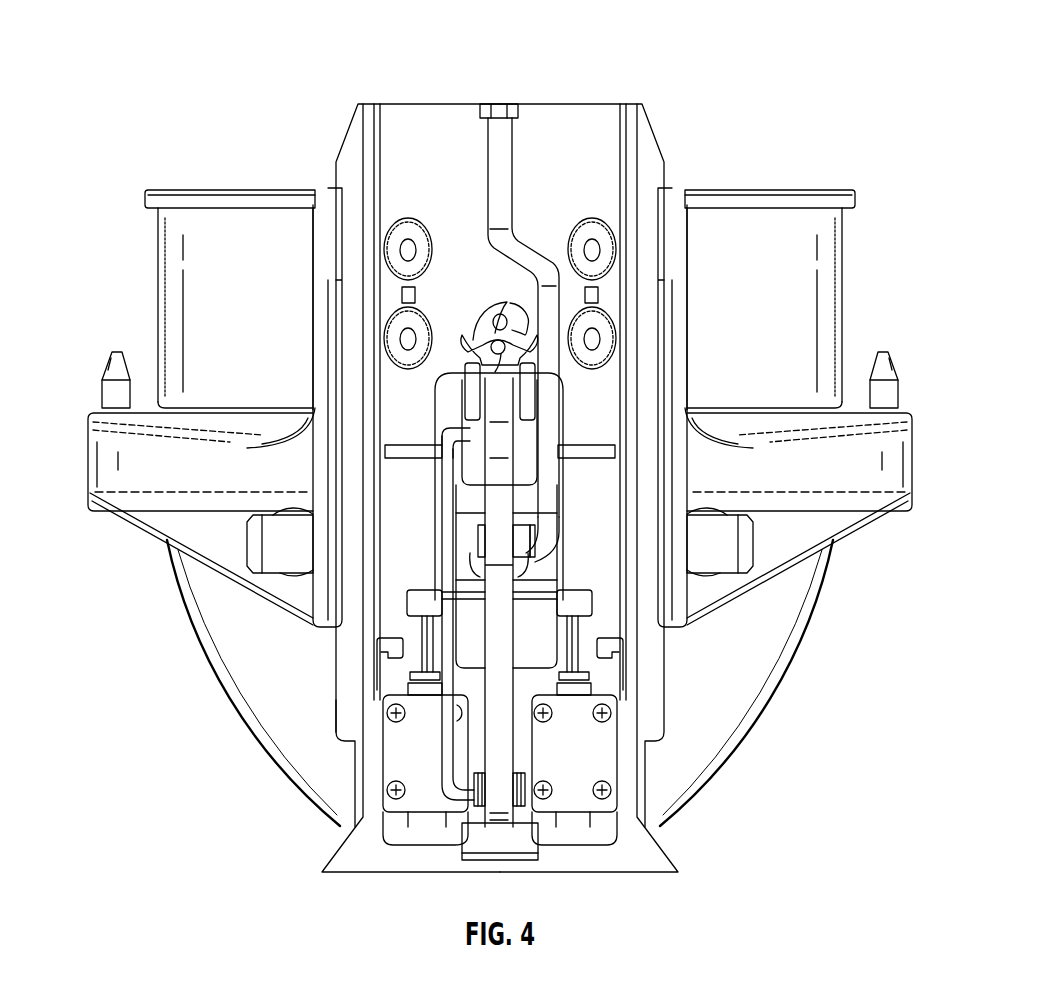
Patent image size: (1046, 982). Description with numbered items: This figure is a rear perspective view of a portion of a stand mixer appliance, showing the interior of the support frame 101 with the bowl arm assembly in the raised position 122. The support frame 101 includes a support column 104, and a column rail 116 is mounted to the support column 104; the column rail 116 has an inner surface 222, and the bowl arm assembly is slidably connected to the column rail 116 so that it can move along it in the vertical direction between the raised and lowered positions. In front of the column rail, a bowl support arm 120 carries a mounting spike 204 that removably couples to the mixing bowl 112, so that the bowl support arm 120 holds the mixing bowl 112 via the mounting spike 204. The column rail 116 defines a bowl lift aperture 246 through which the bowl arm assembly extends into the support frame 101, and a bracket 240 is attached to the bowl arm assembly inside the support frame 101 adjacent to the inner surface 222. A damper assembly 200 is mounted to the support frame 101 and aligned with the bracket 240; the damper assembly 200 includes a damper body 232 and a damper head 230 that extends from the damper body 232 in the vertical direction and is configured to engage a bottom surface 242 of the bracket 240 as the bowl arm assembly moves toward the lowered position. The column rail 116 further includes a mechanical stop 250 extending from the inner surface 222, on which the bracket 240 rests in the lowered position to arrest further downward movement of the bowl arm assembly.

The support frame 101 is at (515, 439).
The support column 104 is at (515, 443).
The column rail 116 is at (612, 115).
The mixing bowl 112 is at (177, 256).
The mounting spike 204 is at (105, 372).
The bowl support arm 120 is at (127, 467).
The bracket 240 is at (395, 443).
The bottom surface 242 is at (400, 466).
The bowl lift aperture 246 is at (443, 492).
The damper head 230 is at (420, 602).
The mechanical stop 250 is at (380, 643).
The inner surface 222 is at (341, 660).
The raised position 122 is at (179, 851).
The damper body 232 is at (383, 762).
The damper assembly 200 is at (435, 850).